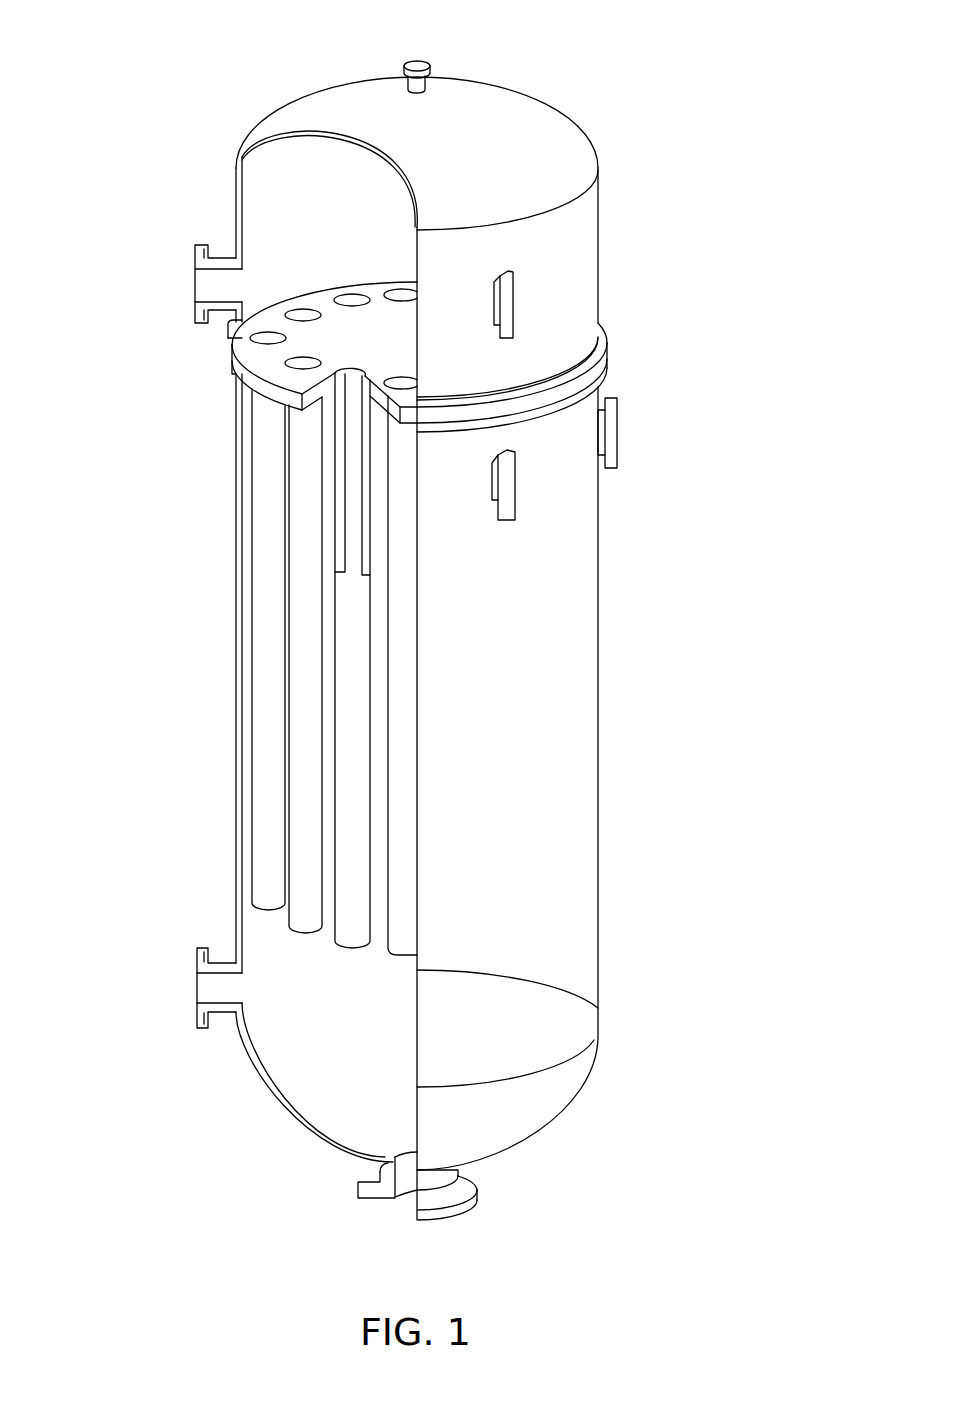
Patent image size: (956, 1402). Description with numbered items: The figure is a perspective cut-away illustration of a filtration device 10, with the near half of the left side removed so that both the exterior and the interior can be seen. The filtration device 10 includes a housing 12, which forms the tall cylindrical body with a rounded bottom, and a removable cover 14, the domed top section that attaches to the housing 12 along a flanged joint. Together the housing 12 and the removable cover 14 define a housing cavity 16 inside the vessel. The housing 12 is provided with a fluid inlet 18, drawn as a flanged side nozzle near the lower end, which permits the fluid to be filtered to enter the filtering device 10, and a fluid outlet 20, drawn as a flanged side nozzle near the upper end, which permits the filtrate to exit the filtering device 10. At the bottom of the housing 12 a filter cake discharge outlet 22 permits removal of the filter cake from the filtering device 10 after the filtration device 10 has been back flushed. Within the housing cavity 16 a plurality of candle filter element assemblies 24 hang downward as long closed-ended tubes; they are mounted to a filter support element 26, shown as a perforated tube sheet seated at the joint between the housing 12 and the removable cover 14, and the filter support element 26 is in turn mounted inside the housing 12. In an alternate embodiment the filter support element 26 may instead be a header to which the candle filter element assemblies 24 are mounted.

The filtration device 10 is at (660, 45).
The housing 12 is at (601, 686).
The removable cover 14 is at (602, 250).
The housing cavity 16 is at (599, 1007).
The fluid inlet 18 is at (196, 991).
The fluid outlet 20 is at (194, 287).
The filter cake discharge outlet 22 is at (478, 1198).
The candle filter element assemblies 24 is at (262, 693).
The filter support element 26 is at (232, 347).